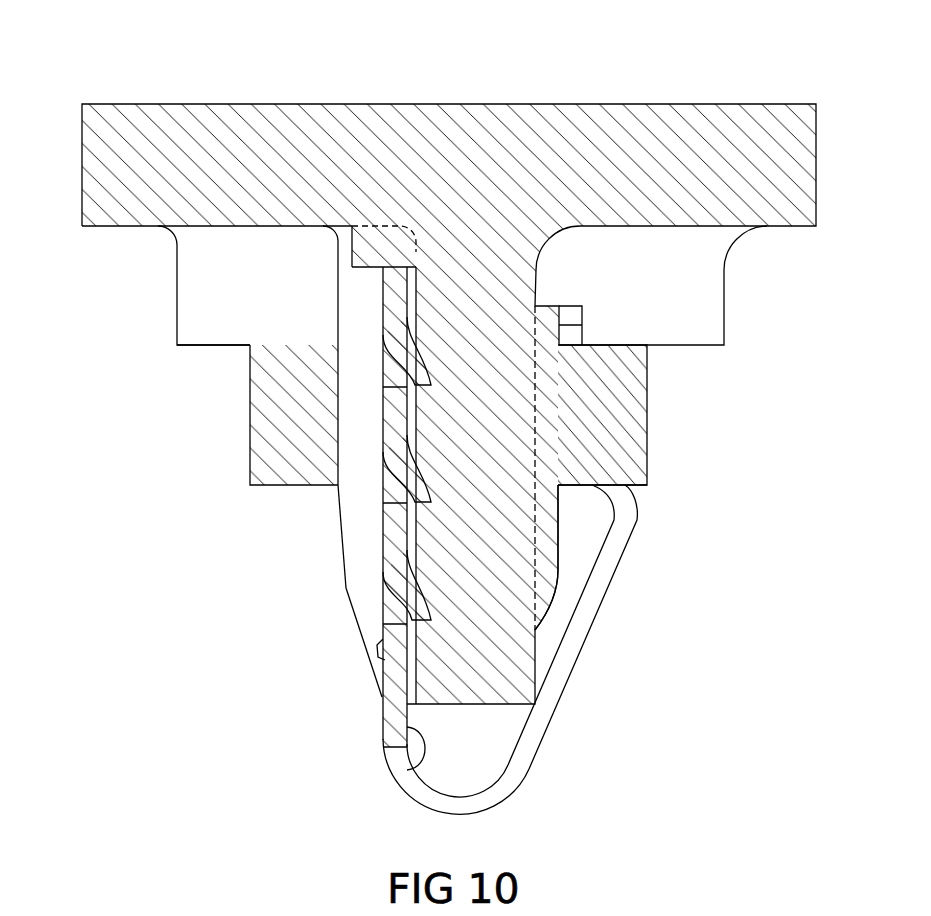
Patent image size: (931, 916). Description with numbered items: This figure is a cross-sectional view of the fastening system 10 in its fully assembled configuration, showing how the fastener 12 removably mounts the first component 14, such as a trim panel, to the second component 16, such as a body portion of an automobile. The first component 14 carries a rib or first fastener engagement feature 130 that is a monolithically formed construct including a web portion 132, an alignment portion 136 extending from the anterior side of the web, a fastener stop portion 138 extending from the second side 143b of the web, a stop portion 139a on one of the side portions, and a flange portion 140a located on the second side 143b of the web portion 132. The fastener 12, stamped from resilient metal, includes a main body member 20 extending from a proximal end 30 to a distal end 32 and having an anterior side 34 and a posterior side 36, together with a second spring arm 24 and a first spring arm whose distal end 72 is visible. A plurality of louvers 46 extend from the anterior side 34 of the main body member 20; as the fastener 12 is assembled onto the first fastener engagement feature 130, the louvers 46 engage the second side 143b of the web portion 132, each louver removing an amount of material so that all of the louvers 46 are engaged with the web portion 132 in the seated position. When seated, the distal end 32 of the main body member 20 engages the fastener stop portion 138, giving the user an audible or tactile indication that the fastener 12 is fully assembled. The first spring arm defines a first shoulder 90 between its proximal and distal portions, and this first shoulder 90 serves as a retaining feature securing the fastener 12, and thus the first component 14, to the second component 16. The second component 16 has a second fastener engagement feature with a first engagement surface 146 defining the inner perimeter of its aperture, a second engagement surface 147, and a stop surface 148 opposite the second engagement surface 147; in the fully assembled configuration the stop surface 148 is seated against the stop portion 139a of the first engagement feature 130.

The fastening system 10 is at (444, 432).
The fastener 12 is at (465, 558).
The first component 14 is at (64, 210).
The second component 16 is at (642, 422).
The main body member 20 is at (352, 536).
The second spring arm 24 is at (580, 656).
The proximal end 30 is at (457, 814).
The distal end 32 is at (343, 275).
The anterior side 34 is at (420, 766).
The posterior side 36 is at (408, 548).
The louvers 46 is at (430, 621).
The distal end 72 is at (573, 306).
The first shoulder 90 is at (637, 518).
The first fastener engagement feature 130 is at (240, 461).
The web portion 132 is at (529, 494).
The alignment portion 136 is at (548, 499).
The fastener stop portion 138 is at (368, 268).
The stop portion 139a is at (212, 347).
The flange portion 140a is at (350, 498).
The second side 143b is at (408, 548).
The first engagement surface 146 is at (338, 401).
The second engagement surface 147 is at (628, 487).
The stop surface 148 is at (668, 285).